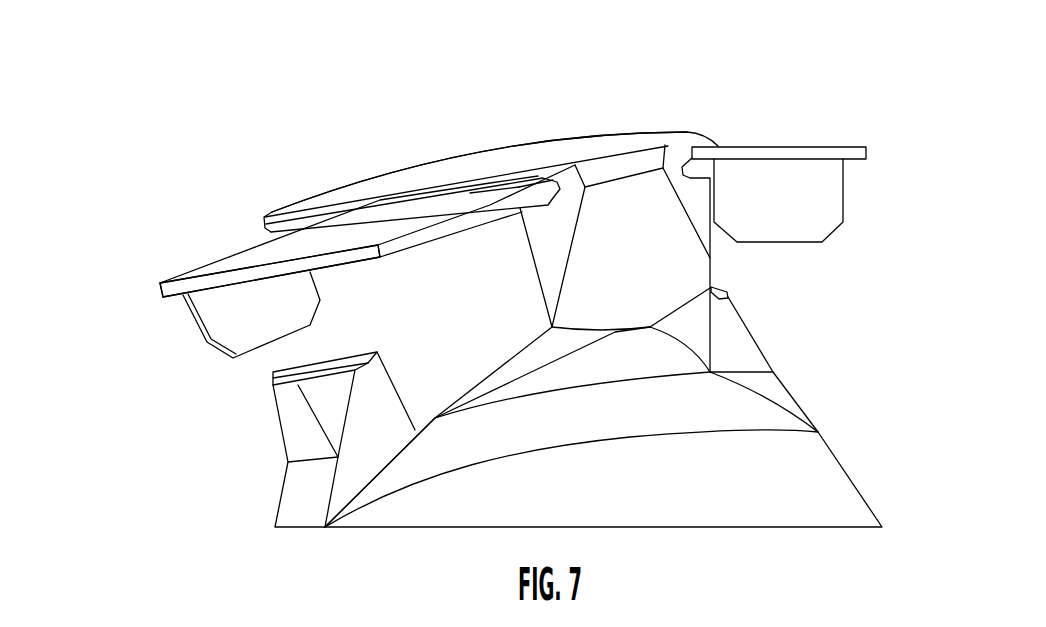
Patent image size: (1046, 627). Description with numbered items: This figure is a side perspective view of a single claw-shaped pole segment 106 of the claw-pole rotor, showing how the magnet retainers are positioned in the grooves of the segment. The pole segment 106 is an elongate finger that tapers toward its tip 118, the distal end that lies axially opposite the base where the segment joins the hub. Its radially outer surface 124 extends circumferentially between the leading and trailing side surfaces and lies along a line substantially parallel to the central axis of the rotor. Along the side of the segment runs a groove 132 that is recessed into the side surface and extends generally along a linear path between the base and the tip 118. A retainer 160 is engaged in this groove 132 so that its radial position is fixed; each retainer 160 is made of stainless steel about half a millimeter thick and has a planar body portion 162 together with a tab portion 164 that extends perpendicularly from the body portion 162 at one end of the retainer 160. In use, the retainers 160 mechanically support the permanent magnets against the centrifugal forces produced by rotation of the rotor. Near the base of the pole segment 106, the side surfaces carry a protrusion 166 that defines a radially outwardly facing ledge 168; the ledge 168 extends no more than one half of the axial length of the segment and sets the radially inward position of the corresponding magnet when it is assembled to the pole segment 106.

The pole segment 106 is at (290, 140).
The tip 118 is at (613, 167).
The radially outer surface 124 is at (523, 165).
The groove 132 is at (253, 233).
The retainer 160 is at (143, 288).
The body portion 162 is at (228, 262).
The tab portion 164 is at (222, 322).
The protrusion 166 is at (274, 439).
The ledge 168 is at (300, 368).